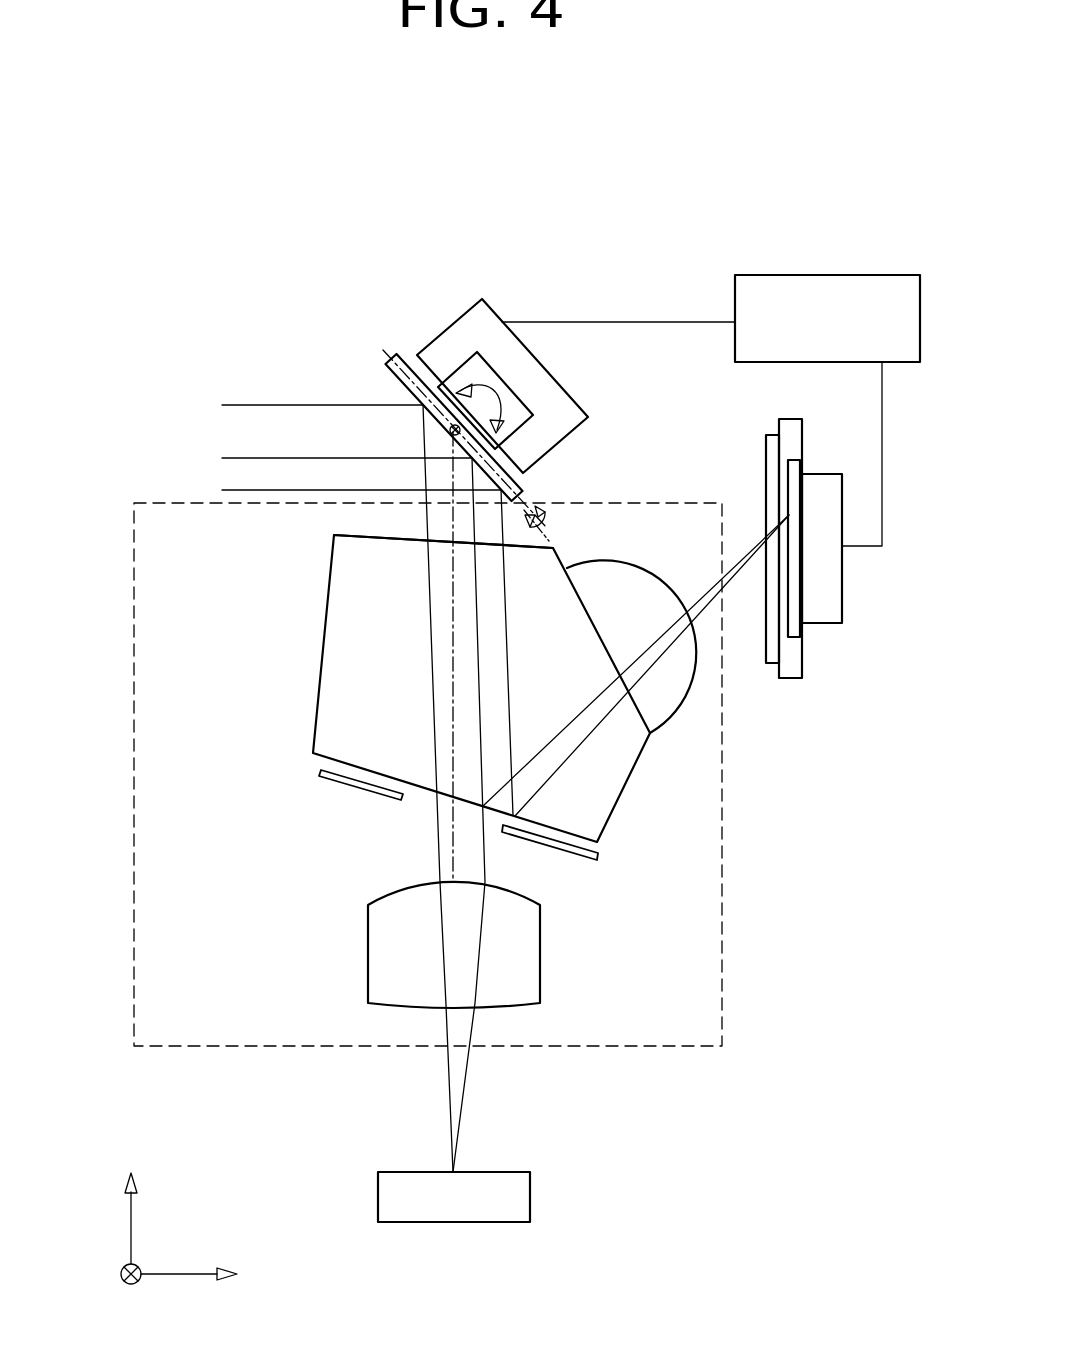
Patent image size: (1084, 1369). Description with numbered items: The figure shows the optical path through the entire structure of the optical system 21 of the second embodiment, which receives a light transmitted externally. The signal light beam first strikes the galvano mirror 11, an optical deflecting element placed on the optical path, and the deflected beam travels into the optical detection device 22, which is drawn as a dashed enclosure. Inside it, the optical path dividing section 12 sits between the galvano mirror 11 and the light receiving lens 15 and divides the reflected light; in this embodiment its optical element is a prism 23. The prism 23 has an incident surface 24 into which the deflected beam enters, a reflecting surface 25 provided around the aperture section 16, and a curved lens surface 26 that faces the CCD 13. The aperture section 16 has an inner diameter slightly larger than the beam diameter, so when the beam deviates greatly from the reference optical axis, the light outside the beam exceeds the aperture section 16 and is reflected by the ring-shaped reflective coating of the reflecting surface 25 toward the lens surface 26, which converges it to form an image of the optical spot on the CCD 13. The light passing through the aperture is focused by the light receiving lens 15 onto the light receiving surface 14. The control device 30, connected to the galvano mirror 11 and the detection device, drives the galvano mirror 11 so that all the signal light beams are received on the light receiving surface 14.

The galvano mirror 11 is at (462, 312).
The optical path dividing section 12 is at (284, 740).
The CCD 13 is at (789, 678).
The light receiving surface 14 is at (403, 1172).
The light receiving lens 15 is at (542, 953).
The aperture section 16 is at (404, 801).
The optical system 21 is at (742, 204).
The optical detection device 22 is at (722, 893).
The prism 23 is at (323, 632).
The incident surface 24 is at (365, 535).
The reflecting surface 25 is at (593, 821).
The lens surface 26 is at (612, 563).
The control device 30 is at (855, 274).